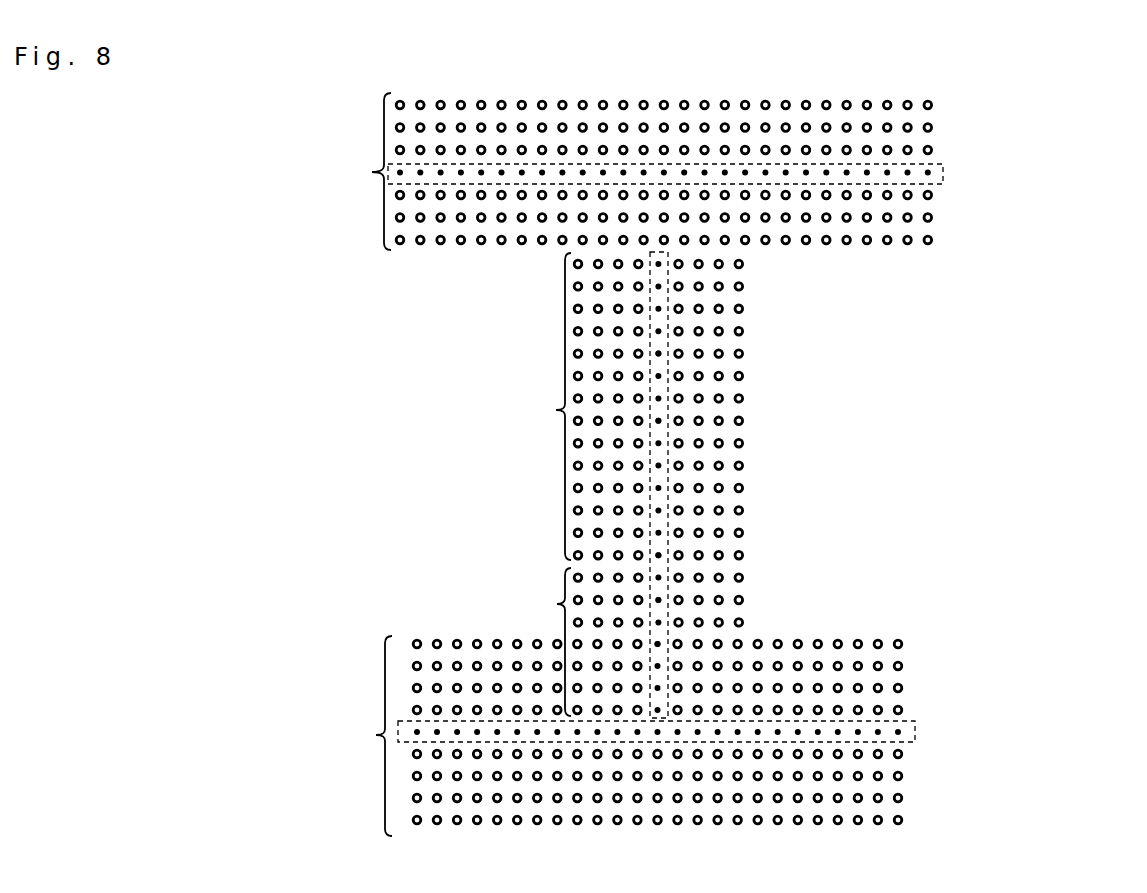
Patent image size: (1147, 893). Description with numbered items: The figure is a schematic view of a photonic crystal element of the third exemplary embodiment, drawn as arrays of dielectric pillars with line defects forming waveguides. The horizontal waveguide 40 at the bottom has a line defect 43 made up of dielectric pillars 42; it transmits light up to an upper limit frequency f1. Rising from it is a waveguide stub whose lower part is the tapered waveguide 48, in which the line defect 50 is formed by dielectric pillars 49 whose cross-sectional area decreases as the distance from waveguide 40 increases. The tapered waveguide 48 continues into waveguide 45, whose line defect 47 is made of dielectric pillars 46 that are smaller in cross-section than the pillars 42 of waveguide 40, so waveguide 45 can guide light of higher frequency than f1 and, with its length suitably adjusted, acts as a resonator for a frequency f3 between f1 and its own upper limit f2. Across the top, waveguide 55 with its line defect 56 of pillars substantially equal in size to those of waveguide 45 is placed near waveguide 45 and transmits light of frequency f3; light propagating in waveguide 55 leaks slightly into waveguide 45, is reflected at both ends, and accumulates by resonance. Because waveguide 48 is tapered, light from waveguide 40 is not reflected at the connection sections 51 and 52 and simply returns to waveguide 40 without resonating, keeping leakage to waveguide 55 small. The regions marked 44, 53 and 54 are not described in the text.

The waveguide 40 is at (375, 735).
The dielectric pillars 42 is at (858, 732).
The line defect 43 is at (915, 735).
The region outside electrode arrays 44 is at (947, 489).
The waveguide 45 is at (560, 410).
The dielectric pillars 46 is at (660, 423).
The line defect 47 is at (667, 355).
The tapered waveguide 48 is at (560, 605).
The dielectric pillars 49 is at (658, 640).
The line defect 50 is at (663, 600).
The connection section 51 is at (657, 565).
The connection section 52 is at (657, 723).
The gap region 53 is at (508, 445).
The gap region 54 is at (347, 487).
The waveguide 55 is at (372, 172).
The line defect 56 is at (942, 175).